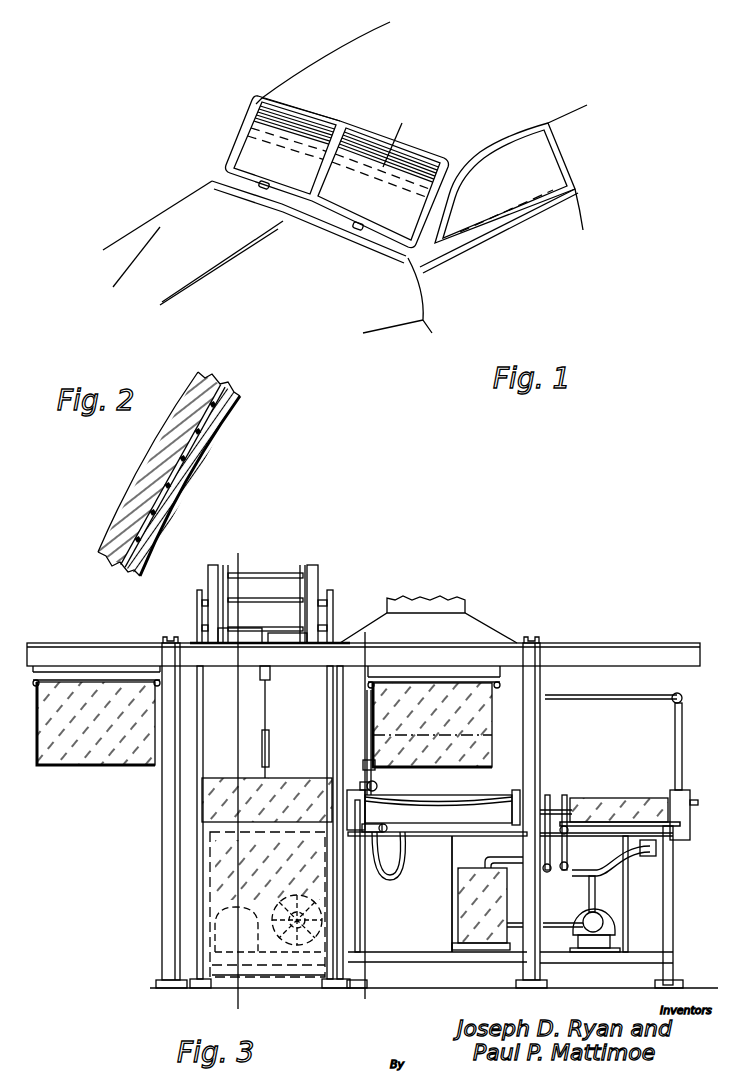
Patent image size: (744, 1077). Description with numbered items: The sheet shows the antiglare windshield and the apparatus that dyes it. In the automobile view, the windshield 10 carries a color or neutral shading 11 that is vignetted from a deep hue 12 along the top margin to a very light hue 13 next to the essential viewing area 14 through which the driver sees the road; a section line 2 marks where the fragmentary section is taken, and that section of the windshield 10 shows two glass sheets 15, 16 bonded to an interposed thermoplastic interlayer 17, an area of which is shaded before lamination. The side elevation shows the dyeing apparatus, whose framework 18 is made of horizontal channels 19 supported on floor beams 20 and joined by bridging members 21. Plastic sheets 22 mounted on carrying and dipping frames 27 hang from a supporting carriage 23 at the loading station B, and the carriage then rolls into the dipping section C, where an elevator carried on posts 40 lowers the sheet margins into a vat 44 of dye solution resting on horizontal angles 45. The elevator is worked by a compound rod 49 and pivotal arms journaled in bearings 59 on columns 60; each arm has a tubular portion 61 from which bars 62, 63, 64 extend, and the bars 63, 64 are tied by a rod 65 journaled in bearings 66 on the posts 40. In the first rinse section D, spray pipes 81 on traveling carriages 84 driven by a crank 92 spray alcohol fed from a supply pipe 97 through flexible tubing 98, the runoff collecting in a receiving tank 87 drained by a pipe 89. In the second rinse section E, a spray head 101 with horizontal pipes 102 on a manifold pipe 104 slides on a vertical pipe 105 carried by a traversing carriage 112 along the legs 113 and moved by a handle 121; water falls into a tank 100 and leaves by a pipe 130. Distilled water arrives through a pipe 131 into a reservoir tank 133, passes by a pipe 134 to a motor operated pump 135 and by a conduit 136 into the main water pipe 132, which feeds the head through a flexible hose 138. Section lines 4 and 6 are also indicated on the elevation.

In FIG. 1, the section line 2— 2 is at (402, 123).
In FIG. 3, the section line 4- 4 is at (238, 553).
In FIG. 3, the section line 6- 6 is at (365, 632).
In FIG. 1, the windshield glass 10 is at (257, 150).
In FIG. 2, the windshield glass 10 is at (147, 448).
In FIG. 1, the color or neutral shading 11 is at (267, 105).
In FIG. 1, the deep hue 12 is at (280, 100).
In FIG. 1, the very light hue 13 is at (282, 122).
In FIG. 1, the essential viewing area 14 is at (277, 165).
In FIG. 2, the glass sheet 15 is at (145, 477).
In FIG. 2, the glass sheet 16 is at (170, 490).
In FIG. 2, the thermoplastic interlayer 17 is at (177, 458).
In FIG. 3, the framework 18 is at (468, 647).
In FIG. 3, the horizontal channels 19 is at (68, 655).
In FIG. 3, the floor beams 20 is at (162, 838).
In FIG. 3, the bridging members 21 is at (166, 637).
In FIG. 3, the plastic sheets 22 is at (72, 732).
In FIG. 3, the supporting carriage 23 is at (34, 680).
In FIG. 3, the carrying and dipping frames 27 is at (38, 727).
In FIG. 3, the posts 40 is at (270, 655).
In FIG. 3, the vat 44 is at (285, 790).
In FIG. 3, the horizontal angles 45 is at (475, 836).
In FIG. 3, the compound rod 49 is at (268, 713).
In FIG. 3, the bearings 59 is at (202, 603).
In FIG. 3, the columns 60 is at (200, 707).
In FIG. 3, the tubular portion 61 is at (240, 636).
In FIG. 3, the bar 62 is at (265, 612).
In FIG. 3, the bar 63 is at (226, 570).
In FIG. 3, the bar 64 is at (312, 568).
In FIG. 3, the rod 65 is at (262, 579).
In FIG. 3, the bearings 66 is at (213, 568).
In FIG. 3, the spray pipes 81 is at (366, 755).
In FIG. 3, the carriages 84 is at (378, 786).
In FIG. 3, the receiving tank 87 is at (435, 817).
In FIG. 3, the pipe 89 is at (455, 880).
In FIG. 3, the crank 92 is at (512, 796).
In FIG. 3, the supply pipe 97 is at (357, 877).
In FIG. 3, the flexible tubing 98 is at (402, 866).
In FIG. 3, the tank 100 is at (588, 808).
In FIG. 3, the spray head 101 is at (665, 708).
In FIG. 3, the horizontal pipes 102 is at (602, 700).
In FIG. 3, the manifold pipe 104 is at (683, 697).
In FIG. 3, the vertical pipe 105 is at (682, 735).
In FIG. 3, the traversing carriage 112 is at (693, 823).
In FIG. 3, the legs 113 is at (668, 910).
In FIG. 3, the handle 121 is at (693, 797).
In FIG. 3, the pipe 130 is at (627, 897).
In FIG. 3, the pipe 131 is at (503, 860).
In FIG. 3, the pipe 132 is at (567, 797).
In FIG. 3, the reservoir tank 133 is at (473, 913).
In FIG. 3, the pipe 134 is at (557, 922).
In FIG. 3, the motor operated pump 135 is at (592, 932).
In FIG. 3, the conduit 136 is at (590, 888).
In FIG. 3, the flexible hose 138 is at (605, 867).
In FIG. 3, the loading station B is at (92, 768).
In FIG. 3, the dipping section C is at (227, 772).
In FIG. 3, the first rinse section D is at (463, 785).
In FIG. 3, the second rinse section E is at (578, 762).